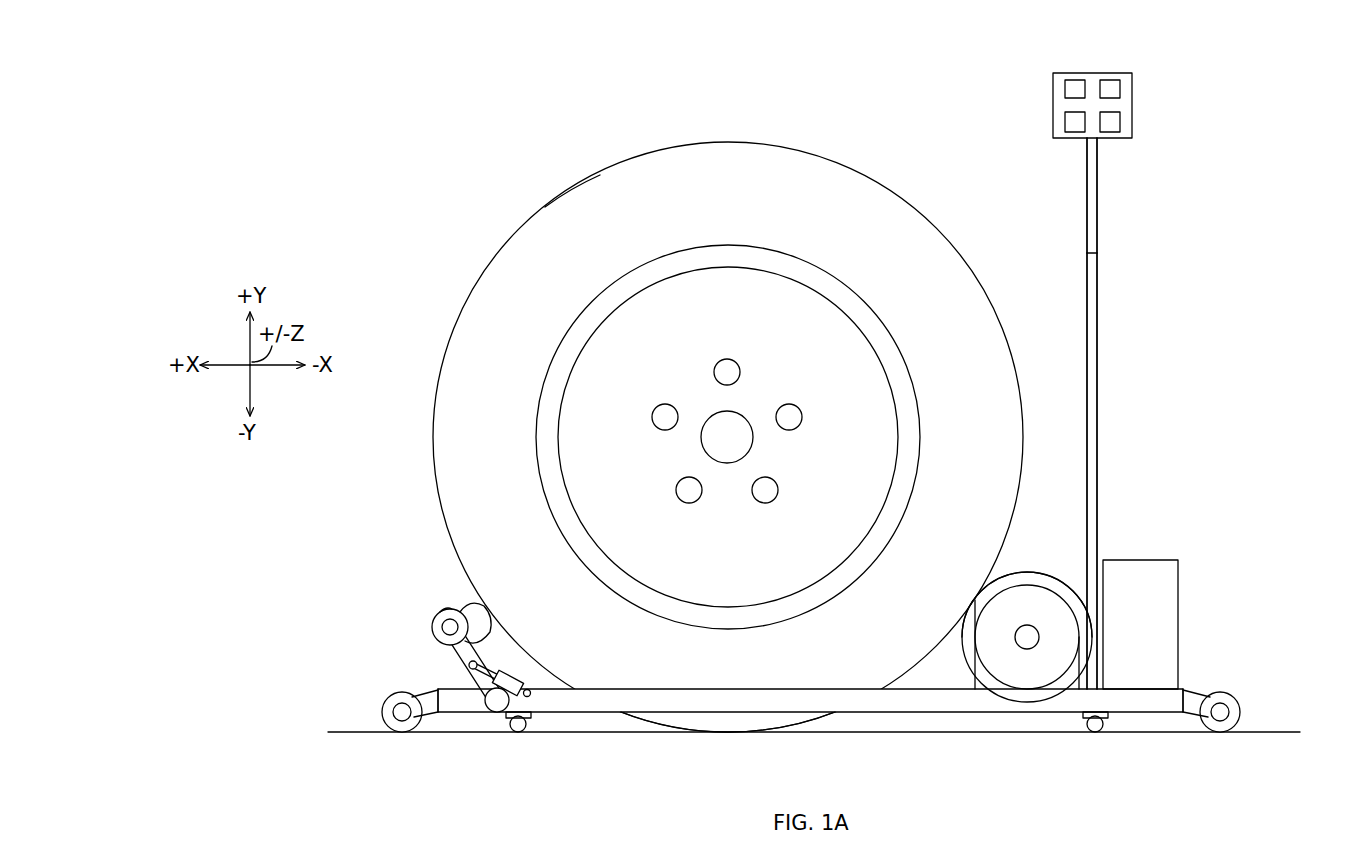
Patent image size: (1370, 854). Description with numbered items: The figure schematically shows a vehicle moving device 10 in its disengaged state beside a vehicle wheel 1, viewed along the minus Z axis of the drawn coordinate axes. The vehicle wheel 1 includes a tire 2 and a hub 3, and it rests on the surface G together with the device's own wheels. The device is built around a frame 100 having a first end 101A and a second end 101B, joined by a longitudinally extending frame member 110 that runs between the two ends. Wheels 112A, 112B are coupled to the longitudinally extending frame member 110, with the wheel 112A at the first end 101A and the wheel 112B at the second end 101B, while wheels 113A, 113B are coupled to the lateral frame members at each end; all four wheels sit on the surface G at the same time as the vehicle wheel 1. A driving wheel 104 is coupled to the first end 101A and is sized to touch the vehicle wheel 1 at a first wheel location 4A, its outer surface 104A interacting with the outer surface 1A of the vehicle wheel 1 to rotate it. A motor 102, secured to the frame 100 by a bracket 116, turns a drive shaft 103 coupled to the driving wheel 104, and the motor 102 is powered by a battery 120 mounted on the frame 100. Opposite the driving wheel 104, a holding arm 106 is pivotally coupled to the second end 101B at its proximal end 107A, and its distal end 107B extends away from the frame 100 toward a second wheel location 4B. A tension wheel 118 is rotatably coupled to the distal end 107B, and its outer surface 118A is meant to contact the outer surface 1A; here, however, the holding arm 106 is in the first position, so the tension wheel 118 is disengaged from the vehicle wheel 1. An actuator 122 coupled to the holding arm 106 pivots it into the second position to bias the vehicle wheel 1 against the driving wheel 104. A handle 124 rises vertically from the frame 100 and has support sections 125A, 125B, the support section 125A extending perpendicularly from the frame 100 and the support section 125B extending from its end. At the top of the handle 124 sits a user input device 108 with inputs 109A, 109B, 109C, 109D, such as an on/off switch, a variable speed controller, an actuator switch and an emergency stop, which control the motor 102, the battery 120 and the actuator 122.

The vehicle wheel 1 is at (634, 128).
The outer surface of the vehicle wheel 1A is at (545, 207).
The tire 2 is at (728, 146).
The hub 3 is at (762, 280).
The vehicle moving device 10 is at (389, 184).
The frame 100 is at (596, 718).
The first end of the frame 101A is at (1166, 718).
The second end of the frame 101B is at (441, 718).
The motor 102 is at (1072, 592).
The drive shaft 103 is at (1040, 638).
The driving wheel 104 is at (967, 654).
The outer surface of the driving wheel 104A is at (1040, 573).
The holding arm 106 is at (476, 652).
The proximal end of the holding arm 107A is at (485, 702).
The distal end of the holding arm 107B is at (460, 660).
The user input device 108 is at (1132, 106).
The input 109A is at (1072, 88).
The input 109B is at (1113, 88).
The input 109C is at (1072, 124).
The input 109D is at (1113, 124).
The longitudinally extending frame member 110 is at (728, 714).
The wheel 112A is at (1220, 692).
The wheel 112B is at (388, 697).
The wheel 113A is at (1103, 722).
The wheel 113B is at (528, 722).
The bracket 116 is at (973, 684).
The tension wheel 118 is at (460, 611).
The outer surface of the tension wheel 118A is at (440, 612).
The battery 120 is at (1140, 560).
The actuator 122 is at (508, 676).
The handle 124 is at (1104, 339).
The support section 125A is at (1097, 402).
The support section 125B is at (1097, 205).
The first wheel location 4A is at (968, 588).
The second wheel location 4B is at (488, 598).
The surface G is at (355, 731).